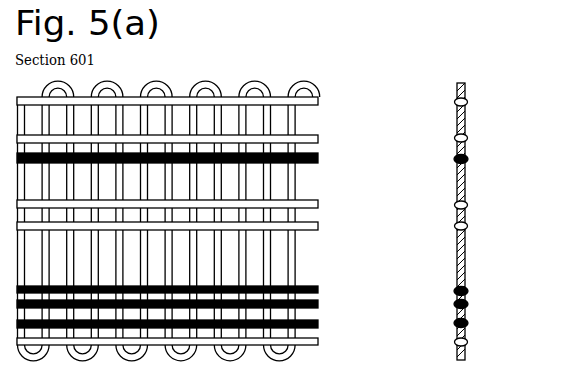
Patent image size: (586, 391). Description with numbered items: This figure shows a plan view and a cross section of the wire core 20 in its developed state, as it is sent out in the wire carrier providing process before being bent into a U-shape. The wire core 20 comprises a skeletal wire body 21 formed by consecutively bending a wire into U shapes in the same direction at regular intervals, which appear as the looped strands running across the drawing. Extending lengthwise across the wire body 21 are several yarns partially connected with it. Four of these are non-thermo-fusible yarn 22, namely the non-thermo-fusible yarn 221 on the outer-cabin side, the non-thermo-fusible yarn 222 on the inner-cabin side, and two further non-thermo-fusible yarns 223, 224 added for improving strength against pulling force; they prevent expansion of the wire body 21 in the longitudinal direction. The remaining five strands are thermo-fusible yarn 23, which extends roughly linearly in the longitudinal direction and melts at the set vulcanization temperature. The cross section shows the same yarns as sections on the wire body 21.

The wire core 20 is at (340, 63).
The wire body 21 is at (206, 82).
The yarn 22 is at (297, 248).
The non-thermo-fusible yarn on the outer-cabin side 221 is at (318, 158).
The non-thermo-fusible yarn on the inner-cabin side 222 is at (318, 323).
The non-thermo-fusible yarn 223 is at (318, 304).
The non-thermo-fusible yarn 224 is at (318, 289).
The thermo-fusible yarn 23 is at (318, 100).